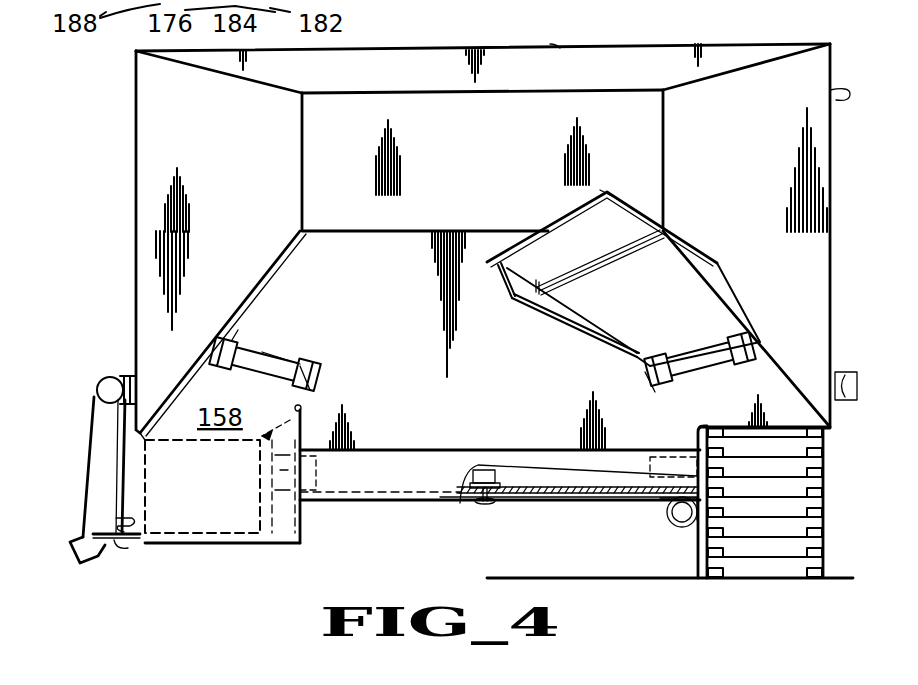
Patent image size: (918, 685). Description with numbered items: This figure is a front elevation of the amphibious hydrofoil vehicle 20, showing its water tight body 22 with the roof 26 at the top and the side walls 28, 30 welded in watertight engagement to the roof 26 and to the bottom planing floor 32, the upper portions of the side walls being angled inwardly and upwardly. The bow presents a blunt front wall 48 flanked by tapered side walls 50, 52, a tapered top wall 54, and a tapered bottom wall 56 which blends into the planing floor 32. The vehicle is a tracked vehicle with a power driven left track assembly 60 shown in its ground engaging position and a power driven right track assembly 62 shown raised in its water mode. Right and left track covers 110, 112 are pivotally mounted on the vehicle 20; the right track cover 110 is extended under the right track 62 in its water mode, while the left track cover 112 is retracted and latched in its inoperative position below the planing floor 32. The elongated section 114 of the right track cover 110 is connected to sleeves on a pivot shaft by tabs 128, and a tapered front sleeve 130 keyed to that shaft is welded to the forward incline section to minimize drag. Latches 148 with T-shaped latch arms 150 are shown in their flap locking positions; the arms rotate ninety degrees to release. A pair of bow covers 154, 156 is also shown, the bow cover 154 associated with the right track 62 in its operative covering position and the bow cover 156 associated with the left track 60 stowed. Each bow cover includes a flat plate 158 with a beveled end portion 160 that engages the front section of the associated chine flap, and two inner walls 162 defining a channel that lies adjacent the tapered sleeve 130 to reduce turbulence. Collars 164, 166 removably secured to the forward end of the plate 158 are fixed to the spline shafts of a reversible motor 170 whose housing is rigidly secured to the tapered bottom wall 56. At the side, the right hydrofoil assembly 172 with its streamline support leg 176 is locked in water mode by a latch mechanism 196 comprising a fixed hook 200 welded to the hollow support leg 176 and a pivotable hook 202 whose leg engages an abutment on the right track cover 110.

The amphibious hydrofoil vehicle 20 is at (603, 24).
The water tight body 22 is at (690, 47).
The roof 26 is at (560, 46).
The side wall 28 is at (830, 86).
The side wall 30 is at (136, 128).
The bottom planing hull or floor 32 is at (460, 503).
The blunt front wall 48 is at (482, 160).
The tapered side wall 50 is at (773, 235).
The tapered side wall 52 is at (192, 240).
The tapered top wall 54 is at (483, 68).
The tapered bottom wall 56 is at (485, 340).
The left track assembly 60 is at (703, 427).
The right track assembly 62 is at (305, 408).
The right track cover 110 is at (140, 541).
The left track cover 112 is at (576, 498).
The elongated section 114 is at (540, 498).
The tabs 128 is at (660, 501).
The tapered front sleeve 130 is at (667, 518).
The latches 148 is at (487, 462).
The T-shaped latch arms 150 is at (478, 504).
The bow cover 154 is at (306, 433).
The bow cover 156 is at (567, 210).
The flat plate 158 is at (629, 298).
The beveled end portion 160 is at (545, 228).
The inner walls 162 is at (553, 315).
The collar 164 is at (238, 328).
The collar 166 is at (322, 378).
The reversible motor 170 is at (282, 356).
The right hydrofoil assembly 172 is at (91, 409).
The streamline support leg 176 is at (95, 461).
The latch mechanism 196 is at (115, 559).
The fixed hook 200 is at (128, 548).
The pivotable hook 202 is at (120, 520).